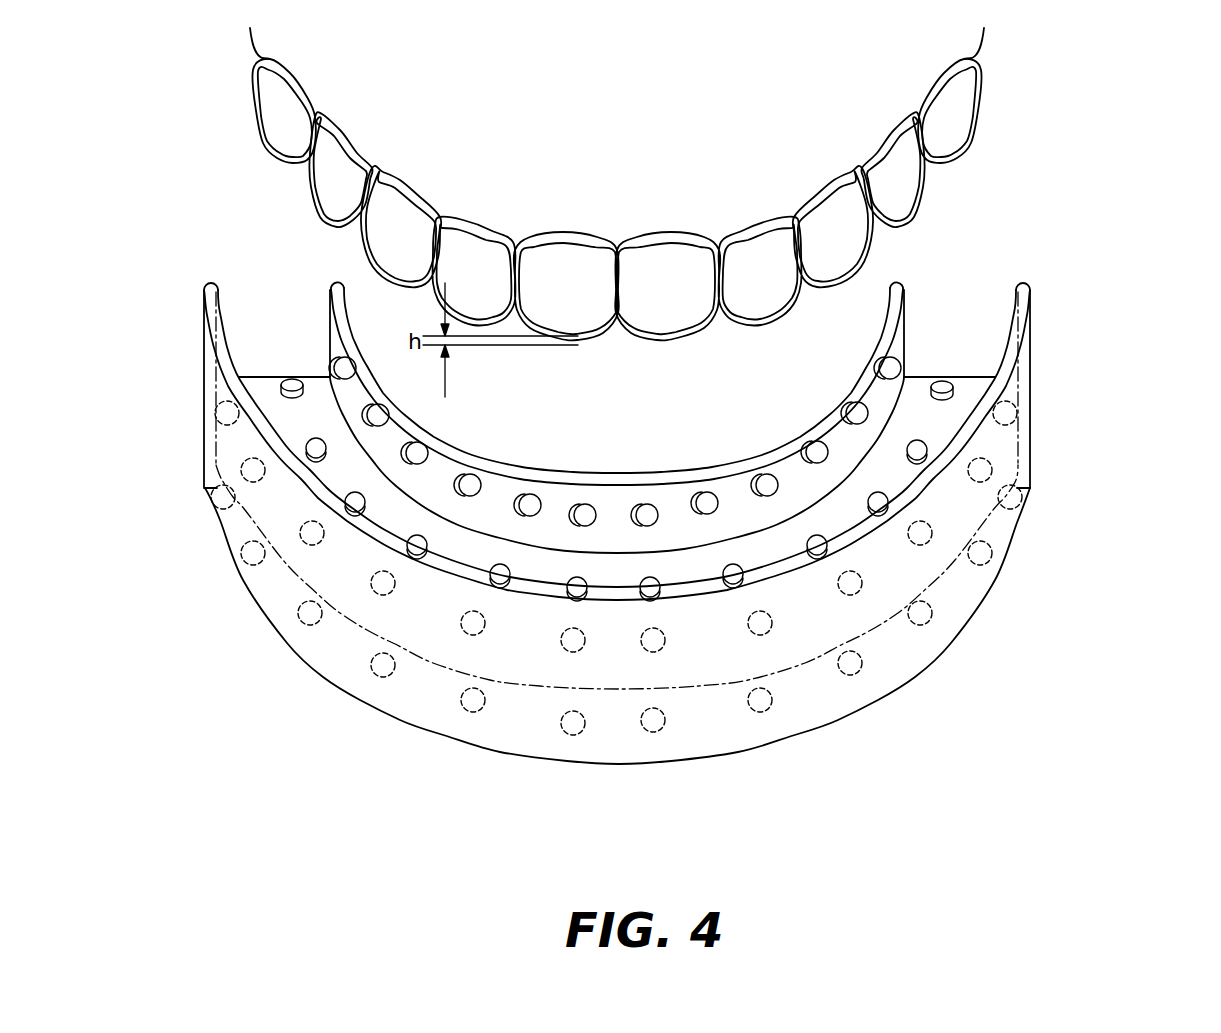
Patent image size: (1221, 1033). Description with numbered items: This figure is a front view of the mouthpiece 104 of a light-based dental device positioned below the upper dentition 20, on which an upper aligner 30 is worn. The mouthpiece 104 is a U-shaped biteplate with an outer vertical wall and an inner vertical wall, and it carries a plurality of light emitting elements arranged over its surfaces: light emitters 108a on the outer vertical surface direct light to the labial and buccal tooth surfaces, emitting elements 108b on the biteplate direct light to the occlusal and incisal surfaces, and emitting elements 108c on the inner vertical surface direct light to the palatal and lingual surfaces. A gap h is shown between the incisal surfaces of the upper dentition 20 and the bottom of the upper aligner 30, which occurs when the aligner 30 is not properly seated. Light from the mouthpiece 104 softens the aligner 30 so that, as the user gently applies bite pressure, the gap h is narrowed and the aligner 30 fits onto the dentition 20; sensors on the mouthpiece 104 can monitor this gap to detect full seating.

The upper dentition 20 is at (574, 234).
The upper aligner 30 is at (684, 247).
The mouthpiece 104 is at (1100, 410).
The light emitters 108a is at (1012, 416).
The emitting elements 108b is at (293, 381).
The emitting elements 108c is at (895, 364).